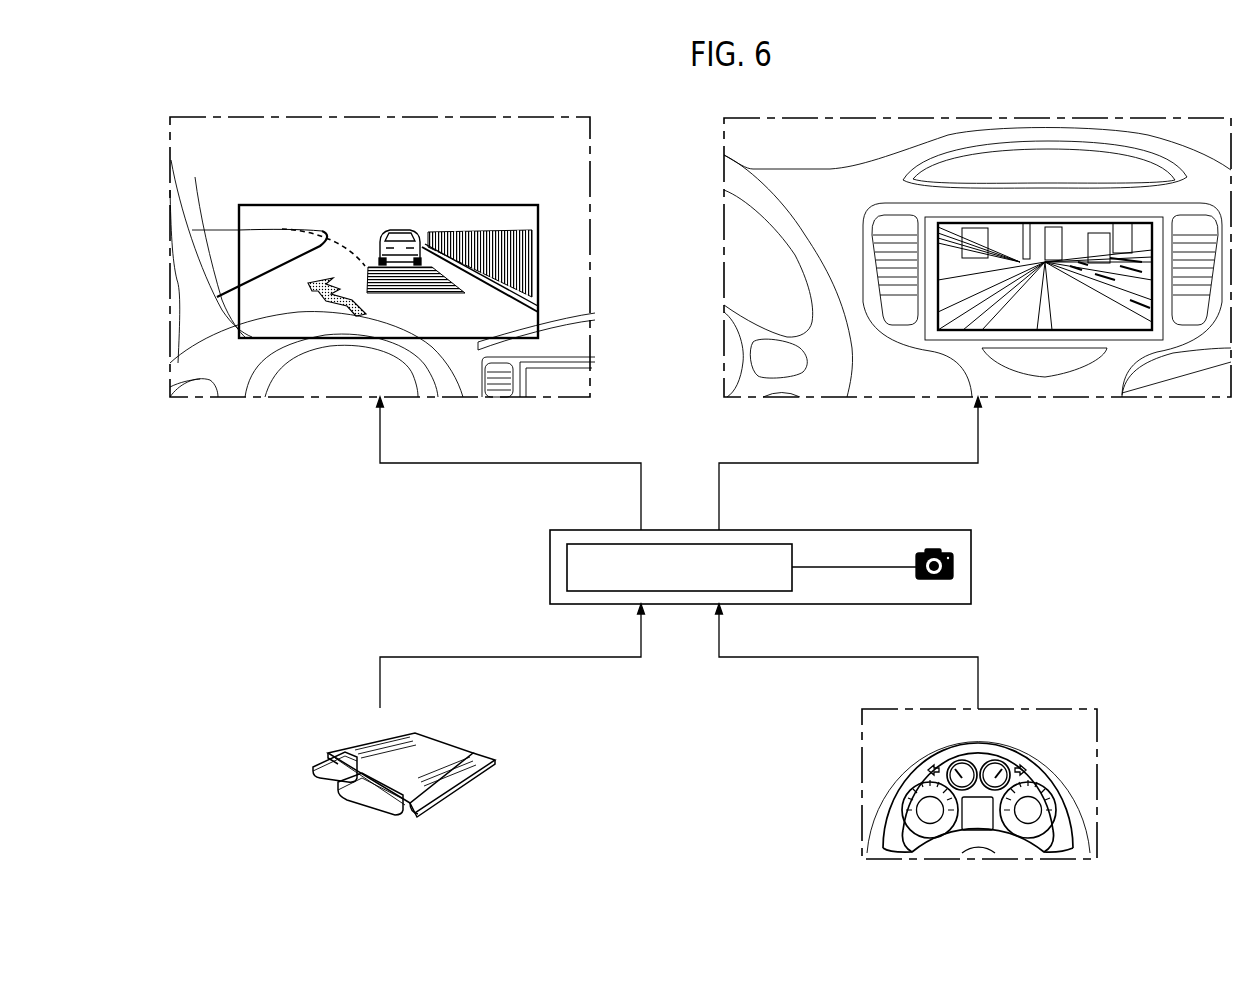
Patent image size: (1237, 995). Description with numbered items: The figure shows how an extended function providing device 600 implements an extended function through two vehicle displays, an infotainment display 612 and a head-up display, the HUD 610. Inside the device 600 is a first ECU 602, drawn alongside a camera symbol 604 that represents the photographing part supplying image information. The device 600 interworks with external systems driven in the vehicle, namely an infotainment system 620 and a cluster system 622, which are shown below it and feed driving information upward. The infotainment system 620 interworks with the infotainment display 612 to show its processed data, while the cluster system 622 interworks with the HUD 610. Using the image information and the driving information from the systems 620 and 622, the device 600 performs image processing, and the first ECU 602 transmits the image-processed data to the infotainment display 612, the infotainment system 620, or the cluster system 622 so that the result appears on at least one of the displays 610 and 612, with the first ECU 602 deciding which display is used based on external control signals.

The extended function providing device 600 is at (971, 568).
The first ECU 602 is at (763, 543).
The camera 604 is at (932, 552).
The HUD 610 is at (538, 258).
The infotainment display 612 is at (1072, 330).
The infotainment system 620 is at (452, 747).
The cluster system 622 is at (1067, 708).